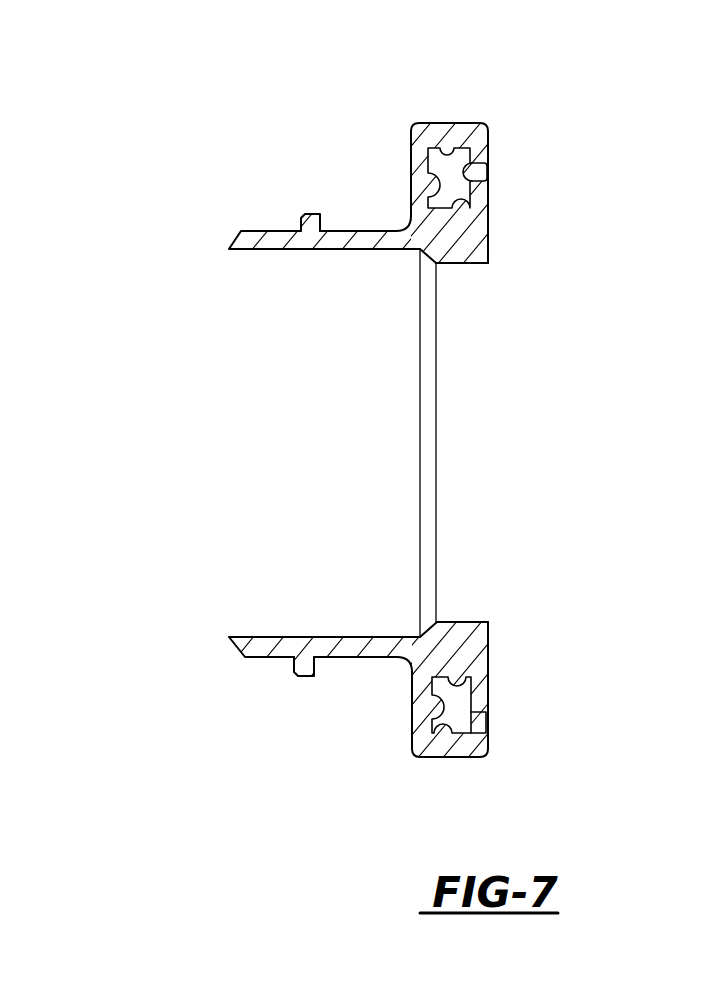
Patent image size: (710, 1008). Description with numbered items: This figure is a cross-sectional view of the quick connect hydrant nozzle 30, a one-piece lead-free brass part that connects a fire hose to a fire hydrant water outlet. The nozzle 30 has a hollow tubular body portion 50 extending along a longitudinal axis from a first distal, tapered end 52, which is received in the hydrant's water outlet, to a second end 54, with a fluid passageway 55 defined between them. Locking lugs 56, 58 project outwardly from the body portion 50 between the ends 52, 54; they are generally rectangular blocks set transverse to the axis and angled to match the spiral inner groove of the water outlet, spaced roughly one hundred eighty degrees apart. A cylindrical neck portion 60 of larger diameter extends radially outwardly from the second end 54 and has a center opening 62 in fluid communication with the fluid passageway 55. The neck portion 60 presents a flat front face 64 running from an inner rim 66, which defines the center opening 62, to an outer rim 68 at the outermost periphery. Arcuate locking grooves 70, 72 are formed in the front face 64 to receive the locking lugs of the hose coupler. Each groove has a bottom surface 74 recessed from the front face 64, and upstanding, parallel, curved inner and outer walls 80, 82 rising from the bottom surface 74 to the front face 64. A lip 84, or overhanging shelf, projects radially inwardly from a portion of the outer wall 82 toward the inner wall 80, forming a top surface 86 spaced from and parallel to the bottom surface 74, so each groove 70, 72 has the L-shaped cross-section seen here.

The quick connect hydrant nozzle 30 is at (208, 232).
The tubular body portion 50 is at (243, 232).
The first distal and tapered end 52 is at (233, 641).
The second end 54 is at (385, 658).
The fluid passageway 55 is at (335, 250).
The locking lug 56 is at (292, 672).
The locking lug 58 is at (318, 213).
The cylindrical neck portion 60 is at (497, 127).
The center opening 62 is at (466, 622).
The flat front face 64 is at (489, 233).
The inner rim 66 is at (470, 263).
The outer rim 68 is at (470, 735).
The locking groove 70 is at (511, 710).
The locking groove 72 is at (496, 204).
The bottom surface 74 is at (432, 170).
The inner wall 80 is at (436, 268).
The outer wall 82 is at (440, 148).
The lip 84 is at (475, 166).
The top surface 86 is at (478, 181).